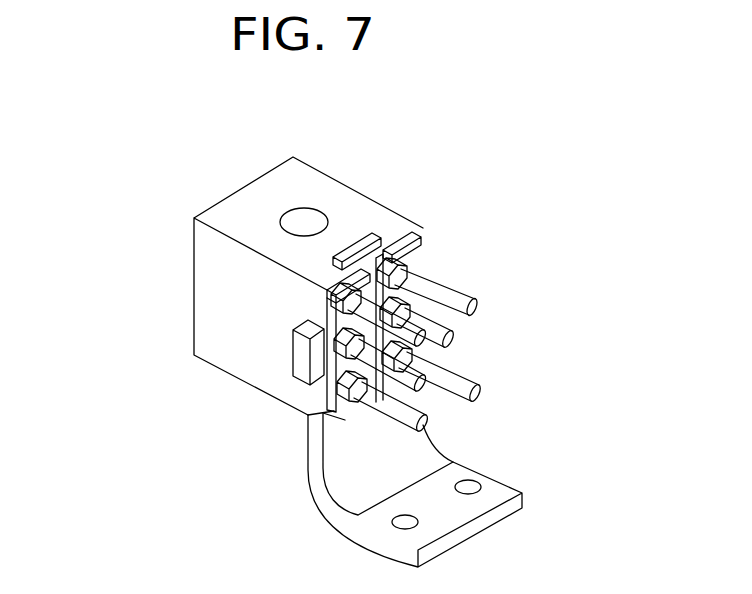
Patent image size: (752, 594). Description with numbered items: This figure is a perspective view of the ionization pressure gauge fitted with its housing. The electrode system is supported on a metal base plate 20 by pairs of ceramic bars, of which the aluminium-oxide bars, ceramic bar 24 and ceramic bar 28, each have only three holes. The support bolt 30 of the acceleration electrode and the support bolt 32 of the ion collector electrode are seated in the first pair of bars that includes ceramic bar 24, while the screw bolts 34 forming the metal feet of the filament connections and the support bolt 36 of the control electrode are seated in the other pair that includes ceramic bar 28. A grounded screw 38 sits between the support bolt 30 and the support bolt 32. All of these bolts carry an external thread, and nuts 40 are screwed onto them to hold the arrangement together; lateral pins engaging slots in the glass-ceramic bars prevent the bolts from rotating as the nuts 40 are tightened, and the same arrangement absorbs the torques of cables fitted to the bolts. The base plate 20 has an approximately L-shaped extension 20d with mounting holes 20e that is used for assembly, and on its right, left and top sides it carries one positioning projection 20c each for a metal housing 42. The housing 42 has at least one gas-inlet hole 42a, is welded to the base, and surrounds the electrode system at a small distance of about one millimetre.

The metal base plate 20 is at (303, 482).
The positioning projection 20c is at (300, 363).
The L-shaped extension 20d is at (452, 444).
The mounting holes 20e is at (407, 522).
The ceramic bar 24 is at (416, 236).
The ceramic bar 28 is at (327, 312).
The support bolt 30 is at (437, 292).
The support bolt 32 is at (448, 376).
The screw bolt 34 is at (386, 242).
The support bolt 36 is at (457, 343).
The grounded screw 38 is at (466, 299).
The nuts 40 is at (323, 412).
The metal housing 42 is at (230, 277).
The gas-inlet hole 42a is at (298, 225).